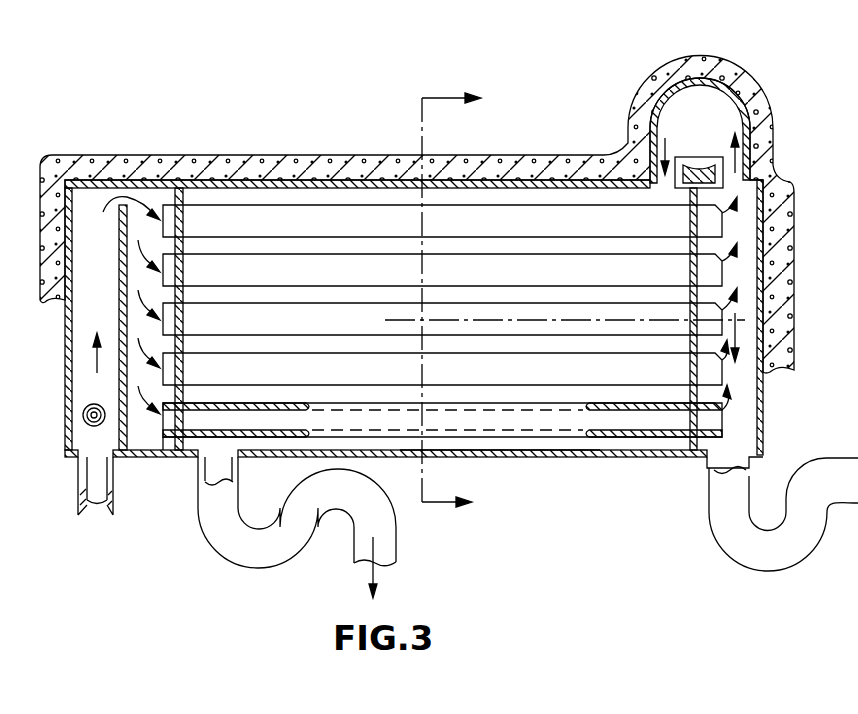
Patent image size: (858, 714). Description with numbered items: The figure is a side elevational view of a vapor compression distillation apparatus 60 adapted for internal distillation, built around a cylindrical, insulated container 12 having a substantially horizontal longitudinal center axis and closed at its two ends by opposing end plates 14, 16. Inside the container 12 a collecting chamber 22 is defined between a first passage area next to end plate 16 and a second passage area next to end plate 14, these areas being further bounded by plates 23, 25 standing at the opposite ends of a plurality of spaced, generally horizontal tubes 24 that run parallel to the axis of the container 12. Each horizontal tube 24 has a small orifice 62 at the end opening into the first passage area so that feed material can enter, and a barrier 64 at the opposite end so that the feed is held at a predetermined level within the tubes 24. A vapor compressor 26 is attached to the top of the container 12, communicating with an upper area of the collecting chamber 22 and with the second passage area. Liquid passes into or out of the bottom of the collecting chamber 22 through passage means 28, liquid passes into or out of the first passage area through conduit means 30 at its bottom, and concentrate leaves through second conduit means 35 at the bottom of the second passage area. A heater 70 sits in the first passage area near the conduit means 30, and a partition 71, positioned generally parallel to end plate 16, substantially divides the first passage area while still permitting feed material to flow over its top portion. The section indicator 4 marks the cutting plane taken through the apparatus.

The container 12 is at (655, 460).
The end plate 14 is at (767, 393).
The end plate 16 is at (70, 237).
The collecting chamber 22 is at (350, 440).
The plate 23 is at (187, 193).
The horizontal tubes 24 is at (592, 228).
The plate 25 is at (742, 278).
The vapor compressor 26 is at (715, 118).
The passage means 28 is at (392, 548).
The conduit means 30 is at (94, 520).
The second conduit means 35 is at (735, 527).
The apparatus 60 is at (540, 482).
The small orifice 62 is at (165, 422).
The barriers 64 is at (700, 420).
The heater 70 is at (85, 423).
The partition 71 is at (133, 217).
The section line 4- 4 is at (461, 301).